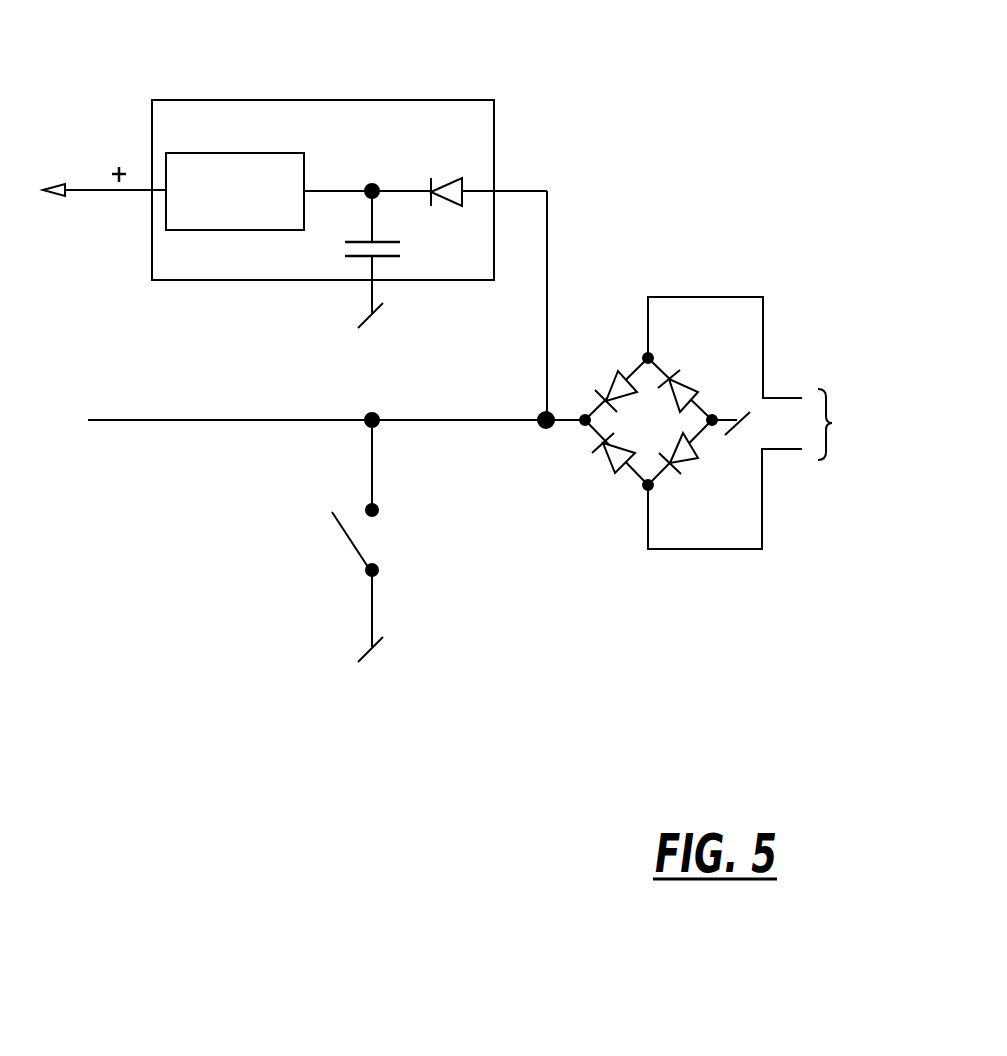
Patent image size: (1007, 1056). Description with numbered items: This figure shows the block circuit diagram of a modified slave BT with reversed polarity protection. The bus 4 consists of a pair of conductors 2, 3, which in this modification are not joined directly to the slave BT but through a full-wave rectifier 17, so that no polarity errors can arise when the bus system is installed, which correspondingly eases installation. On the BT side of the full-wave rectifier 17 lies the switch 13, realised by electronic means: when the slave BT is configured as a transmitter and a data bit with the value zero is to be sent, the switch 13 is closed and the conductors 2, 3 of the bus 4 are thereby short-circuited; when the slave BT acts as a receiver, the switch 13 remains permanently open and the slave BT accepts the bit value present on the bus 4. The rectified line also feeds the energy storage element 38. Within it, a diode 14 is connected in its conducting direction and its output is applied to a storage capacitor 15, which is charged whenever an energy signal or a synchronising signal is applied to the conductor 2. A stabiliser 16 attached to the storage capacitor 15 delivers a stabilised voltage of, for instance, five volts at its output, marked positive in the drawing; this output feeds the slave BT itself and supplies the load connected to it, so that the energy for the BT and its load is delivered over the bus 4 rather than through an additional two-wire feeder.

The energy storage element 38 is at (477, 100).
The stabiliser 16 is at (197, 230).
The storage capacitor 15 is at (392, 257).
The diode 14 is at (452, 207).
The switch 13 is at (350, 547).
The full-wave rectifier 17 is at (633, 465).
The conductor 2 is at (779, 398).
The conductor 3 is at (783, 450).
The bus 4 is at (825, 450).